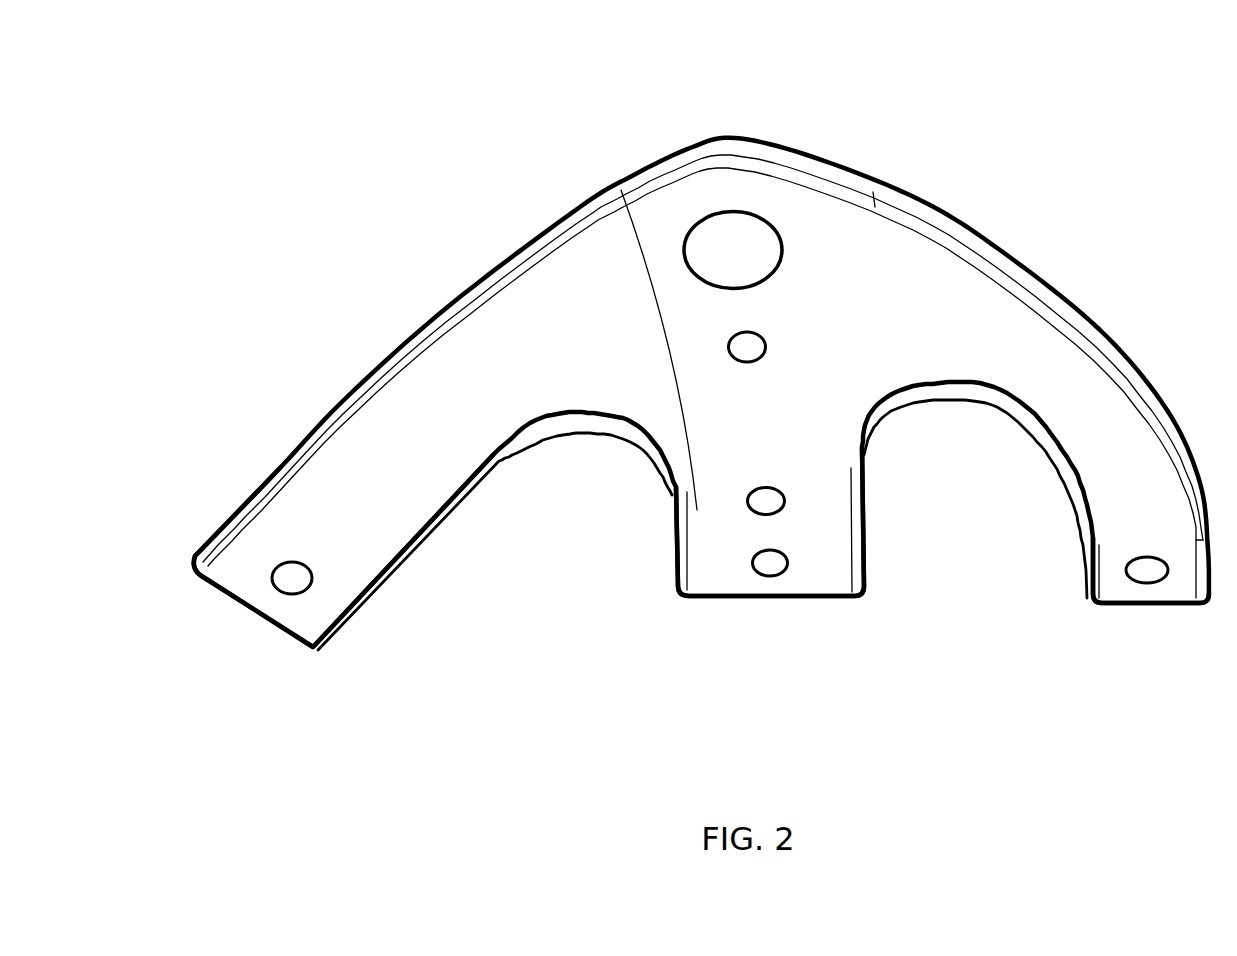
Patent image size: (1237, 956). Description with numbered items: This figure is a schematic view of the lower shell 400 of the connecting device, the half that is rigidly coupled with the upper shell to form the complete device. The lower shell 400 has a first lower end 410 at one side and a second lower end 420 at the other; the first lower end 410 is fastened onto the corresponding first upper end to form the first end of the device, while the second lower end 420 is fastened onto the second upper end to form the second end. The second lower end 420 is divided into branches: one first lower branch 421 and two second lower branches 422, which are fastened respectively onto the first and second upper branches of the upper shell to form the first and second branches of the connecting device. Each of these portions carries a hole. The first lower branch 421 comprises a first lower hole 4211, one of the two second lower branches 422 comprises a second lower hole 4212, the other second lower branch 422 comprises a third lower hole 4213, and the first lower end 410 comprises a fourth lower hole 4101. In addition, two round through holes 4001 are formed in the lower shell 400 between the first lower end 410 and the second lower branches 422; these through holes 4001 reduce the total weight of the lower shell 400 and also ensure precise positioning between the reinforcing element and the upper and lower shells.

The lower shell 400 is at (514, 338).
The first lower end 410 is at (688, 202).
The fourth lower hole 4101 is at (745, 257).
The round through holes 4001 is at (770, 502).
The second lower end 420 is at (712, 552).
The second lower hole 4212 is at (772, 565).
The first lower branch 421 is at (253, 574).
The first lower hole 4211 is at (297, 582).
The second lower branches 422 is at (1118, 542).
The third lower hole 4213 is at (1145, 583).